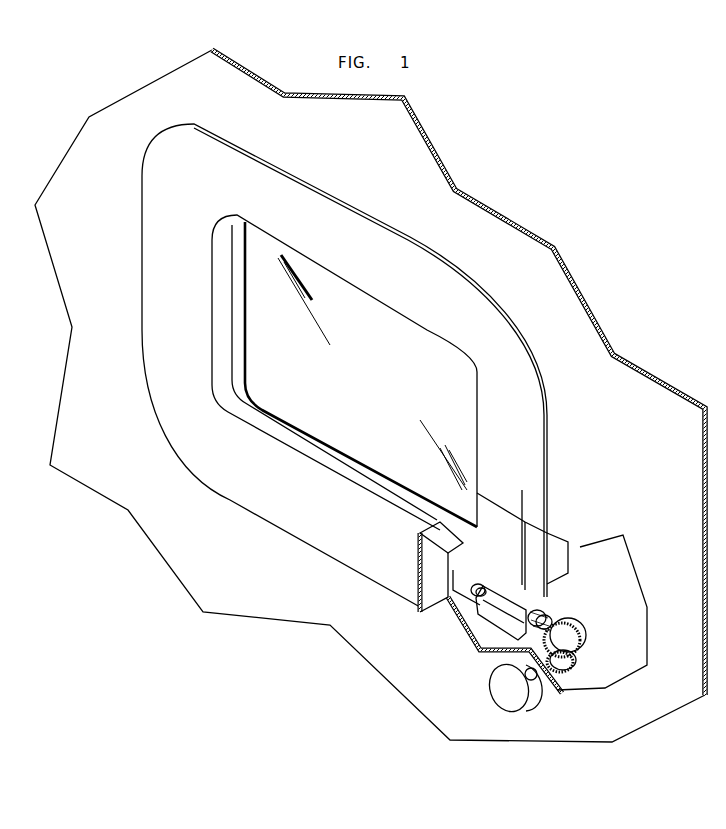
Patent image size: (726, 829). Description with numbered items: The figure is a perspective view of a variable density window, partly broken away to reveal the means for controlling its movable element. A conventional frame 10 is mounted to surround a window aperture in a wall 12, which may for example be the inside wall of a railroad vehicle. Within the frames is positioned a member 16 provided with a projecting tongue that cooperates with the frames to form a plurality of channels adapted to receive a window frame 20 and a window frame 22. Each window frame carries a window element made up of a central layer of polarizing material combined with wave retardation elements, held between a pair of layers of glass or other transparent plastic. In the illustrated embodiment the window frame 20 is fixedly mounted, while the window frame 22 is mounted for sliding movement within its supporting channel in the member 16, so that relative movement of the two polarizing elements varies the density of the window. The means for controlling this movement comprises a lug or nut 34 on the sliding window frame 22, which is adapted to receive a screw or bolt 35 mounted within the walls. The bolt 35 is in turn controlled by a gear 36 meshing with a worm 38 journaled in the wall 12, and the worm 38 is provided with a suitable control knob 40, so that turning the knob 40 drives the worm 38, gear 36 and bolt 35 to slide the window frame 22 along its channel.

The frame 10 is at (248, 505).
The wall 12 is at (474, 634).
The member 16 is at (434, 583).
The window frame 20 is at (561, 556).
The window frame 22 is at (508, 560).
The lug or nut 34 is at (502, 610).
The screw or bolt 35 is at (546, 618).
The gear 36 is at (584, 633).
The worm 38 is at (573, 659).
The control knob 40 is at (499, 688).